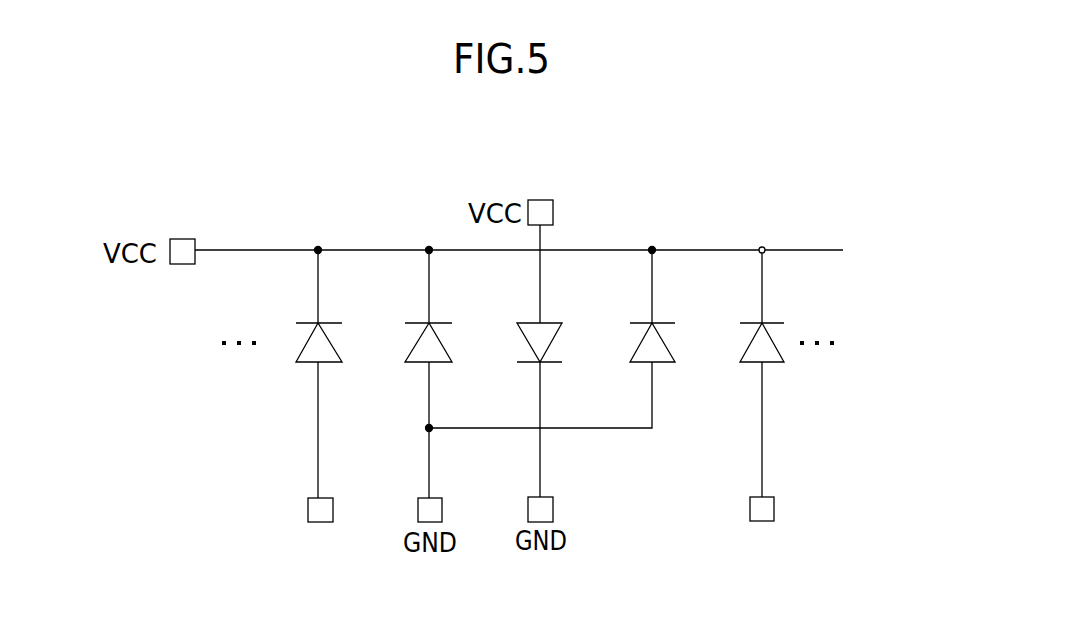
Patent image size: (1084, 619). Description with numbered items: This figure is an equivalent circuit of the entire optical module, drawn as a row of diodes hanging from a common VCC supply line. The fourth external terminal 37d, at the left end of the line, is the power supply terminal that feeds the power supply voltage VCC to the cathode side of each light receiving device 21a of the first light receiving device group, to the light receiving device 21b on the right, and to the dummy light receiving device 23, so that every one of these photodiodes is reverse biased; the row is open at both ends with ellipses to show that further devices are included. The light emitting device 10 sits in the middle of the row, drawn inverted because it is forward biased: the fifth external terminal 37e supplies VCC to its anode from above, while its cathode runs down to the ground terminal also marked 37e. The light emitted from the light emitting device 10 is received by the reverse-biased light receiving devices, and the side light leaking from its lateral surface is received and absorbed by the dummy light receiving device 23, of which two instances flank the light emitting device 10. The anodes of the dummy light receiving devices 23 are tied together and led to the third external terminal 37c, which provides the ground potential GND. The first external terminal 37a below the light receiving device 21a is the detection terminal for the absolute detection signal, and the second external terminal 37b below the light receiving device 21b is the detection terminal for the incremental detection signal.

The light emitting device 10 is at (520, 335).
The light receiving device 21a is at (300, 352).
The light emitting element 21b is at (741, 352).
The dummy light receiving device 23 is at (408, 352).
The first external terminal 37a is at (312, 498).
The second external terminal 37b is at (752, 497).
The third external terminal 37c is at (420, 498).
The fourth external terminal 37d is at (181, 239).
The fifth external terminal 37e is at (543, 200).